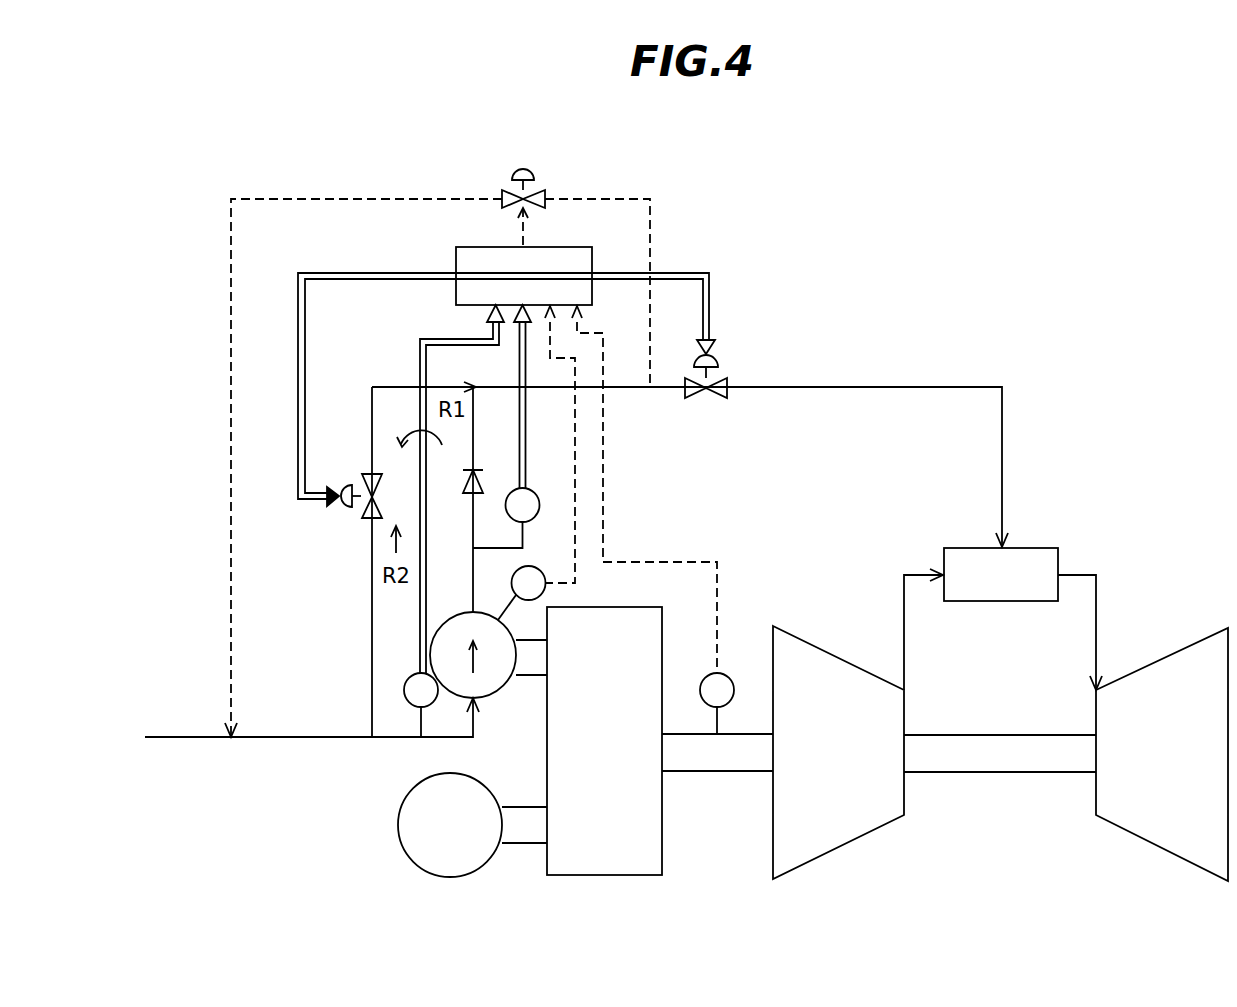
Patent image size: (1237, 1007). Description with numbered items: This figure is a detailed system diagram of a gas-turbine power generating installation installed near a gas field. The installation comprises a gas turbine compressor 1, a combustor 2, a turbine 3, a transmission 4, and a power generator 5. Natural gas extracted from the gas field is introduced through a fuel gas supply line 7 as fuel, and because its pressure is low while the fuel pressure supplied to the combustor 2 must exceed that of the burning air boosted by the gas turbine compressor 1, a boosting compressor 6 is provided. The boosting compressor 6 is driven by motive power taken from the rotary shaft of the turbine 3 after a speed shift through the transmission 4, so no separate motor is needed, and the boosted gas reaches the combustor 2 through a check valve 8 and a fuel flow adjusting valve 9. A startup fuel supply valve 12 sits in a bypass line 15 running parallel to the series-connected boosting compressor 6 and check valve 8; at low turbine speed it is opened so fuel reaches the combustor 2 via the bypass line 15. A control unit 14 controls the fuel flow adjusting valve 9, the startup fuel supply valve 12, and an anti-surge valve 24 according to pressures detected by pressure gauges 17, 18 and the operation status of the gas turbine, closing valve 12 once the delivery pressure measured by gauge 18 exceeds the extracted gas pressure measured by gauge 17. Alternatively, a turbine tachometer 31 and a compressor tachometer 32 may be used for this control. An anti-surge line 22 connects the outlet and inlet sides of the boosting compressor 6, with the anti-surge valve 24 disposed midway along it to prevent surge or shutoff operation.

The gas turbine compressor 1 is at (865, 837).
The combustor 2 is at (1037, 547).
The turbine 3 is at (1135, 838).
The transmission 4 is at (603, 875).
The power generator 5 is at (465, 877).
The boosting compressor 6 is at (458, 615).
The fuel gas supply line 7 is at (312, 737).
The check valve 8 is at (480, 470).
The fuel flow adjusting valve 9 is at (712, 398).
The startup fuel supply valve 12 is at (362, 512).
The control unit 14 is at (570, 247).
The bypass line 15 is at (372, 618).
The pressure gauge 17 is at (410, 677).
The pressure gauge 18 is at (531, 493).
The anti-surge line 22 is at (620, 198).
The anti-surge valve 24 is at (540, 193).
The turbine tachometer 31 is at (708, 677).
The compressor tachometer 32 is at (542, 566).